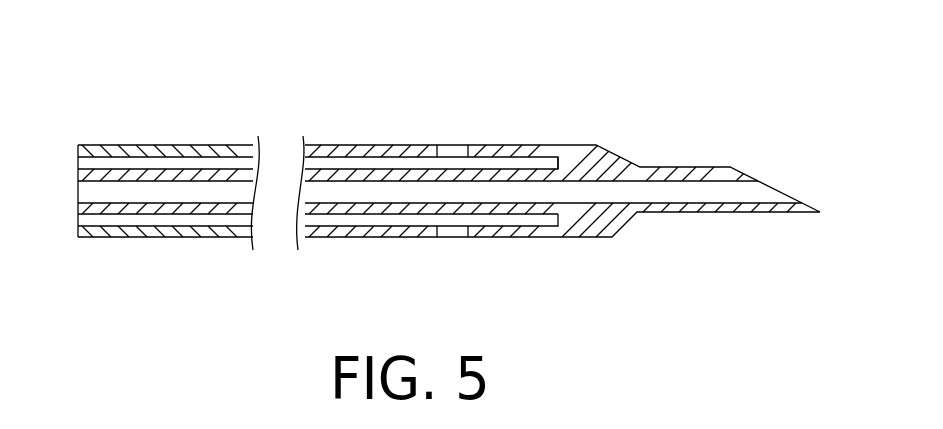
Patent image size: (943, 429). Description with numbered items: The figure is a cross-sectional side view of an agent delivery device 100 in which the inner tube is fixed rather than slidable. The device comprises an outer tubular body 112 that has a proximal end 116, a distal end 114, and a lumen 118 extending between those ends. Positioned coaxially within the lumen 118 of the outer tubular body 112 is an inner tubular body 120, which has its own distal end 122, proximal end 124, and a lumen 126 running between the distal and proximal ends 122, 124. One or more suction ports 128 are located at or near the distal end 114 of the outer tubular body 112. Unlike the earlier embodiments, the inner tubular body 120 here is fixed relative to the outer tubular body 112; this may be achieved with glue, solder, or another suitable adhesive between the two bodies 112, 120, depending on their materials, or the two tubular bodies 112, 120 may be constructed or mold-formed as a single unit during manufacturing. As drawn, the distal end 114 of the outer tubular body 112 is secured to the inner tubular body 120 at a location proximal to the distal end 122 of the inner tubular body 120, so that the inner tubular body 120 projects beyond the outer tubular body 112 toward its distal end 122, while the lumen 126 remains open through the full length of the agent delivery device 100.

The agent delivery device 100 is at (727, 105).
The outer tubular body 112 is at (354, 146).
The distal end 114 is at (549, 147).
The proximal end 116 is at (95, 150).
The lumen 118 is at (330, 224).
The inner tubular body 120 is at (413, 209).
The distal end 122 is at (758, 208).
The proximal end 124 is at (95, 207).
The lumen 126 is at (538, 192).
The suction ports 128 is at (454, 148).